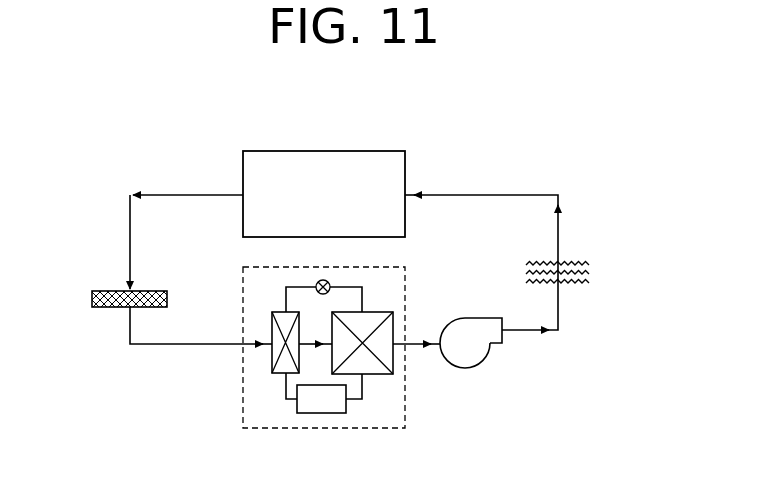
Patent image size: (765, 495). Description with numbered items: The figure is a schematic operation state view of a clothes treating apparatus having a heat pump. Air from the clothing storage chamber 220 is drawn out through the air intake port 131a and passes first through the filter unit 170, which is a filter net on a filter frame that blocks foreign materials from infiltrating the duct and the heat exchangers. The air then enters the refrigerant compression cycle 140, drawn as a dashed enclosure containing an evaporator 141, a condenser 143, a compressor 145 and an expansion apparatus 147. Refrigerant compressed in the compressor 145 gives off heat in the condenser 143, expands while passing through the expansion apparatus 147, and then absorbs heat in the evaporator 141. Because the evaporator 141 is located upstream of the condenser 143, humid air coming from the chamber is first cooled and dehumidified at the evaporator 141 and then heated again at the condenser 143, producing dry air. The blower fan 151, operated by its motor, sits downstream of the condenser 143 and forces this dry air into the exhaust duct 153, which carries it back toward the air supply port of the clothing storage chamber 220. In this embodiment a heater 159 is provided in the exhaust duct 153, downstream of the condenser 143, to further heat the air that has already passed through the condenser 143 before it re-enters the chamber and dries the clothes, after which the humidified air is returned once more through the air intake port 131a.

The clothing storage chamber 220 is at (362, 150).
The air intake port 131a is at (186, 193).
The filter unit 170 is at (113, 290).
The refrigerant compression cycle 140 is at (241, 380).
The evaporator 141 is at (280, 375).
The condenser 143 is at (380, 375).
The compressor 145 is at (321, 413).
The expansion apparatus 147 is at (331, 286).
The blower fan 151 is at (483, 362).
The exhaust duct 153 is at (560, 222).
The heater 159 is at (580, 285).